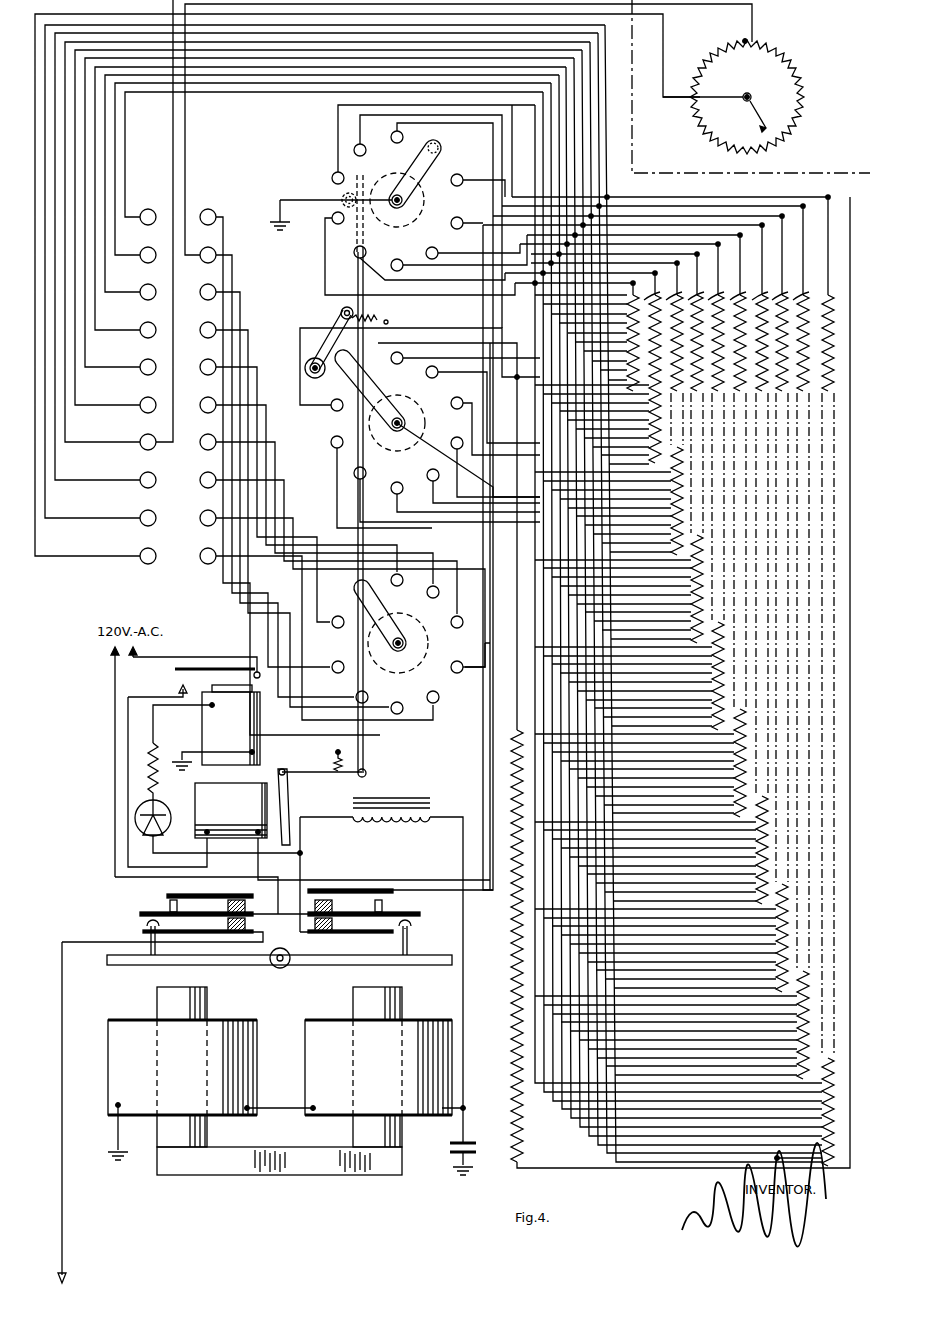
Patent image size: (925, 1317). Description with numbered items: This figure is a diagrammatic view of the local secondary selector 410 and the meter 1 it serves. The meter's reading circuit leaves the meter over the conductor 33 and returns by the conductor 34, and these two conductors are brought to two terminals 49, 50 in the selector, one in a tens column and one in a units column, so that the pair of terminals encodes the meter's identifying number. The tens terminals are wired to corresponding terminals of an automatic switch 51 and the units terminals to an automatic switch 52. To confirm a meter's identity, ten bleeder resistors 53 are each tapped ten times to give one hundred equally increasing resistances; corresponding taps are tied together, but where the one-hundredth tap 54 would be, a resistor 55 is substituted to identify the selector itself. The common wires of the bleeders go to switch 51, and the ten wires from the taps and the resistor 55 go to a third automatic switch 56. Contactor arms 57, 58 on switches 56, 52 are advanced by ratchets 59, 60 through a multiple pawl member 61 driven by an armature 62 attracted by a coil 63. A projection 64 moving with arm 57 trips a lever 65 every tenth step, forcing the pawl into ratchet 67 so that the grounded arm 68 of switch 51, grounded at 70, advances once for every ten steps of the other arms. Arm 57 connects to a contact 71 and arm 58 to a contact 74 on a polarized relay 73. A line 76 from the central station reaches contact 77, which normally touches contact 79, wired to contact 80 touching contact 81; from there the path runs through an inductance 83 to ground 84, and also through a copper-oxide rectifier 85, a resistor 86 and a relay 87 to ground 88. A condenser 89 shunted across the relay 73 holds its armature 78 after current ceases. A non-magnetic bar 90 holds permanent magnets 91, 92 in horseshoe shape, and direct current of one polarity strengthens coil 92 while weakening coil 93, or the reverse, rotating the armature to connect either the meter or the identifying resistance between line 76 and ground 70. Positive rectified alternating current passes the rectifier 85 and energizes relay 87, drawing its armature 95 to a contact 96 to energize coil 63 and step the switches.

The meter 1 is at (751, 86).
The conductor 33 is at (753, 32).
The conductor 34 is at (680, 99).
The terminal 49 is at (216, 256).
The terminal 50 is at (152, 446).
The automatic switch 51 is at (417, 497).
The automatic switch 52 is at (396, 644).
The bleeder resistors 53 is at (790, 385).
The one-hundredth tap 54 is at (777, 1158).
The resistor 55 is at (511, 925).
The automatic switch 56 is at (419, 609).
The contactor arm 57 is at (382, 380).
The contactor arm 58 is at (382, 612).
The ratchet 59 is at (410, 452).
The ratchet 60 is at (414, 672).
The multiple pawl member 61 is at (366, 768).
The armature 62 is at (289, 808).
The coil 63 is at (228, 840).
The projection 64 is at (350, 374).
The lever 65 is at (321, 345).
The ratchet 67 is at (406, 228).
The arm 68 is at (408, 170).
The ground 70 is at (285, 244).
The contact 71 is at (342, 889).
The polarized relay 73 is at (299, 1092).
The contact 74 is at (172, 895).
The line 76 is at (63, 1187).
The contact 77 is at (141, 912).
The armature 78 is at (250, 965).
The contact 79 is at (149, 927).
The contact 80 is at (412, 913).
The contact 81 is at (412, 928).
The inductance 83 is at (390, 802).
The ground 84 is at (120, 1166).
The copper-oxide rectifier 85 is at (134, 816).
The resistor 86 is at (148, 764).
The relay 87 is at (203, 718).
The ground 88 is at (184, 772).
The condenser 89 is at (470, 1150).
The bar 90 is at (246, 1174).
The permanent magnet 91 is at (207, 1134).
The permanent magnet / coil 92 is at (452, 1022).
The coil 93 is at (238, 1020).
The armature 95 is at (176, 669).
The contact 96 is at (168, 689).
The secondary selector 410 is at (322, 1243).